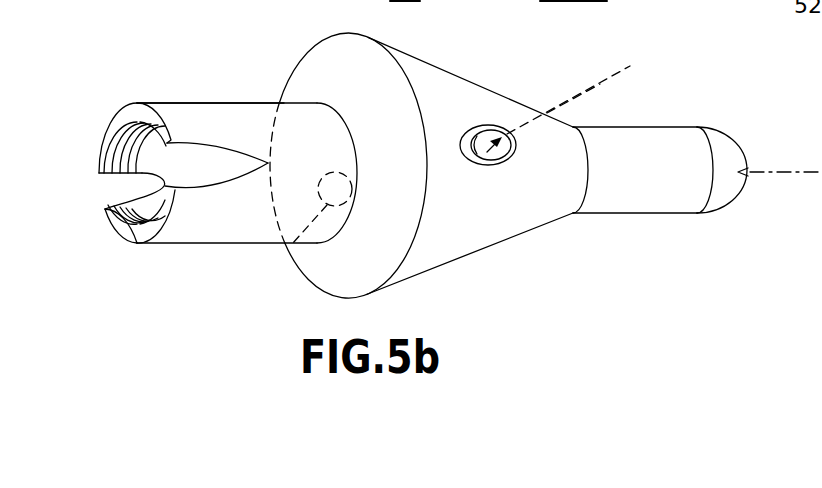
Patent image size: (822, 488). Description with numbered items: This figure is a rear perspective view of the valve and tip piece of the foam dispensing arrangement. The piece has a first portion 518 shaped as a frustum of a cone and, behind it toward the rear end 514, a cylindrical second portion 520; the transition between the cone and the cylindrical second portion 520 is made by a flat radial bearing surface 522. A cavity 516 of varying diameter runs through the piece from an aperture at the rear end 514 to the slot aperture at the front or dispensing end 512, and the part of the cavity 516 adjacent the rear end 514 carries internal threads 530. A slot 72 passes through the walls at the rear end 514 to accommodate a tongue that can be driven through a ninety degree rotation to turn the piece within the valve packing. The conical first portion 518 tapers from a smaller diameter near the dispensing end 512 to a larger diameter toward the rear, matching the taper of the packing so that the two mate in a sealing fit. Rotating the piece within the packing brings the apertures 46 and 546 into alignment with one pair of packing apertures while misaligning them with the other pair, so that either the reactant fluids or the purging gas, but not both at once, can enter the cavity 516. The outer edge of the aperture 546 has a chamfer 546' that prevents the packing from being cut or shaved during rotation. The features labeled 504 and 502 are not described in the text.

The rear end 514 is at (103, 94).
The cavity 516 is at (130, 152).
The slot 72 is at (105, 209).
The internal threads 530 is at (136, 246).
The flat radial bearing surface 522 is at (335, 56).
The aperture 46 is at (286, 257).
The second portion 520 is at (245, 82).
The first portion 518 is at (519, 252).
The aperture 546 is at (504, 172).
The chamfer 546' is at (550, 98).
The axis 504 is at (568, 98).
The front or dispensing end 512 is at (711, 232).
The longitudinal axis 502 is at (772, 170).